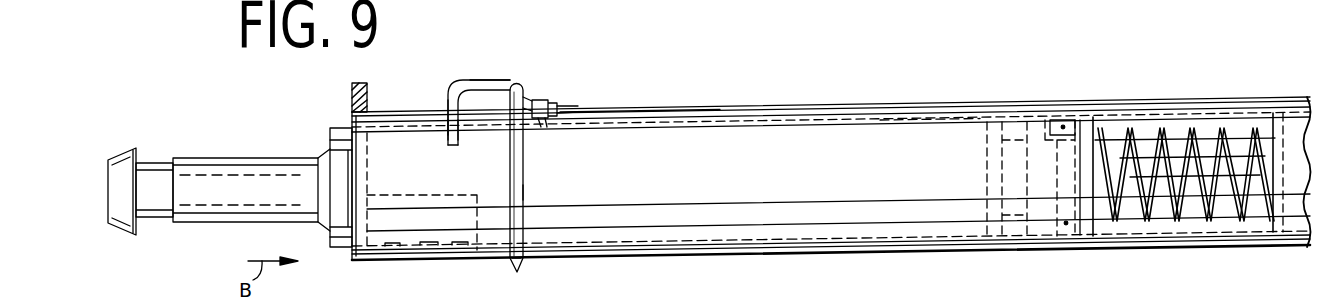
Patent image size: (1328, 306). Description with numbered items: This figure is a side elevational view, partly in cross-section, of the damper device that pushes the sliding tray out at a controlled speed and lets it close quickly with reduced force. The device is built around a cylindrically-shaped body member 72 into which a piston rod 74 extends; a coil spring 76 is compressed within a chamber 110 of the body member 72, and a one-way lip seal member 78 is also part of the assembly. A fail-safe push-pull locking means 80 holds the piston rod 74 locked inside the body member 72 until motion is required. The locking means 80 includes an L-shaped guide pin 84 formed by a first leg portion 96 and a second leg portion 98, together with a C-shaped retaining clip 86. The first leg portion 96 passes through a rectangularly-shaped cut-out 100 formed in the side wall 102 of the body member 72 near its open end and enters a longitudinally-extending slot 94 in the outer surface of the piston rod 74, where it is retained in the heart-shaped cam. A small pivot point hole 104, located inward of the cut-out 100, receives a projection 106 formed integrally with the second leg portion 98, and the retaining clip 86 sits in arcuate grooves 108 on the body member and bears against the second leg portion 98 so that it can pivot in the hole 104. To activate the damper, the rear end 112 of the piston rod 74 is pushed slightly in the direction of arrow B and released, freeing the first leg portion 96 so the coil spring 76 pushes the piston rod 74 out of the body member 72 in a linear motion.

The body member 72 is at (690, 108).
The piston rod 74 is at (333, 148).
The coil spring 76 is at (1186, 228).
The one-way lip seal member 78 is at (1092, 240).
The fail-safe push-pull locking means 80 is at (504, 70).
The guide pin 84 is at (478, 80).
The retaining clip 86 is at (520, 264).
The longitudinally-extending slot 94 is at (448, 130).
The first leg portion 96 is at (448, 105).
The second leg portion 98 is at (526, 92).
The rectangularly-shaped cut-out 100 is at (458, 130).
The side wall 102 is at (581, 108).
The pivot point hole 104 is at (545, 122).
The projection 106 is at (540, 126).
The arcuate grooves 108 is at (525, 193).
The chamber 110 is at (943, 121).
The rear end 112 is at (118, 148).